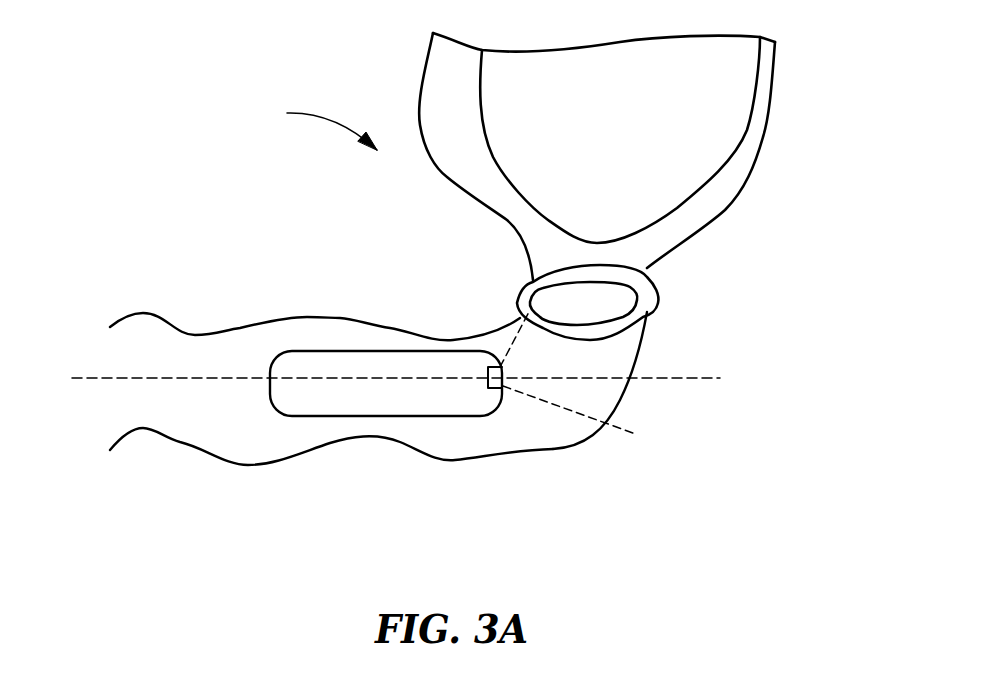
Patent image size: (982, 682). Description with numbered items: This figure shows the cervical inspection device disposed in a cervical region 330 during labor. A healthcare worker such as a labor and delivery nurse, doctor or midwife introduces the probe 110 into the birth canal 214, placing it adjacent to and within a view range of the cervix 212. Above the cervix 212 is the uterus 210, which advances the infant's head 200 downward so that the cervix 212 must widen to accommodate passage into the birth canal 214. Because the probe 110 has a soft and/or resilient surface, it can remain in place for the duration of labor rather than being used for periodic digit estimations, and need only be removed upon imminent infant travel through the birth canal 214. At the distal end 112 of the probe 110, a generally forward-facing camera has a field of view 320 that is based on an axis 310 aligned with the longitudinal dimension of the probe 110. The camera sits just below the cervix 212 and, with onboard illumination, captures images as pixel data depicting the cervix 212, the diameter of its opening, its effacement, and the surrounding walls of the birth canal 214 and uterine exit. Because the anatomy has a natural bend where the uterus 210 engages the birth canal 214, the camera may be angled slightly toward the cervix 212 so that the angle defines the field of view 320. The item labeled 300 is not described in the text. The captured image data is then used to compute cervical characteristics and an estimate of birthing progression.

The head 200 is at (628, 177).
The uterus 210 is at (763, 140).
The cervix 212 is at (650, 283).
The field of view 320 is at (578, 360).
The breast 300 is at (498, 220).
The cervical region 330 is at (308, 127).
The axis 310 is at (105, 378).
The probe 110 is at (302, 351).
The distal end 112 is at (503, 413).
The birth canal 214 is at (567, 472).